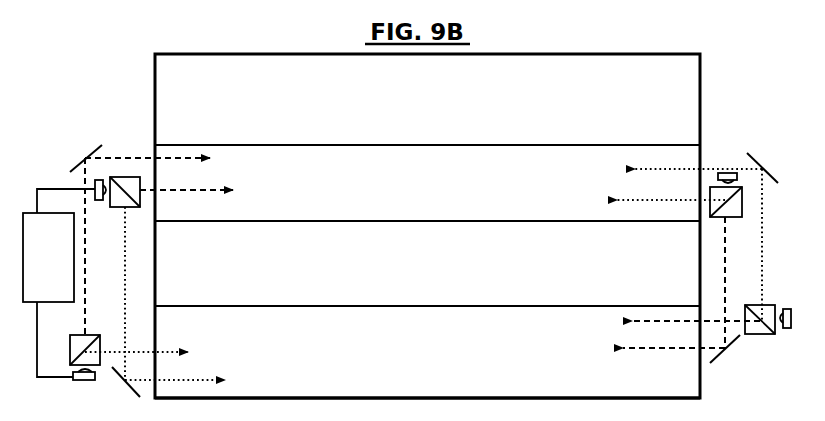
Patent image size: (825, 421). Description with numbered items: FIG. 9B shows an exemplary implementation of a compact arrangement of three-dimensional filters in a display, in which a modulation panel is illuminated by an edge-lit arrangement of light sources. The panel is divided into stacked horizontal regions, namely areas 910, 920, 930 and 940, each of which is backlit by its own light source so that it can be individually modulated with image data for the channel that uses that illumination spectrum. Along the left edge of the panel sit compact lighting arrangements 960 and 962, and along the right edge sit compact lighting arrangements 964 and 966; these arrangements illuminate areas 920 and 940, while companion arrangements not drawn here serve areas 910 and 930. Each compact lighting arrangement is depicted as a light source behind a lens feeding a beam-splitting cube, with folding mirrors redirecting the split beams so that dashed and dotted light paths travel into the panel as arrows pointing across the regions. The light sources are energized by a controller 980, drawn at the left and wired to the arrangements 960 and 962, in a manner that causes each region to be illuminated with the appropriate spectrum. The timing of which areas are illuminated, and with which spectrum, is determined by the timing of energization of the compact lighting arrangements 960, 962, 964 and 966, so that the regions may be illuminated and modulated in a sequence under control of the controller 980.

The area 910 is at (600, 142).
The area 920 is at (598, 216).
The area 930 is at (598, 303).
The area 940 is at (598, 391).
The compact lighting arrangement 960 is at (118, 185).
The compact lighting arrangement 962 is at (75, 350).
The compact lighting arrangement 964 is at (733, 203).
The compact lighting arrangement 966 is at (768, 330).
The controller 980 is at (59, 283).